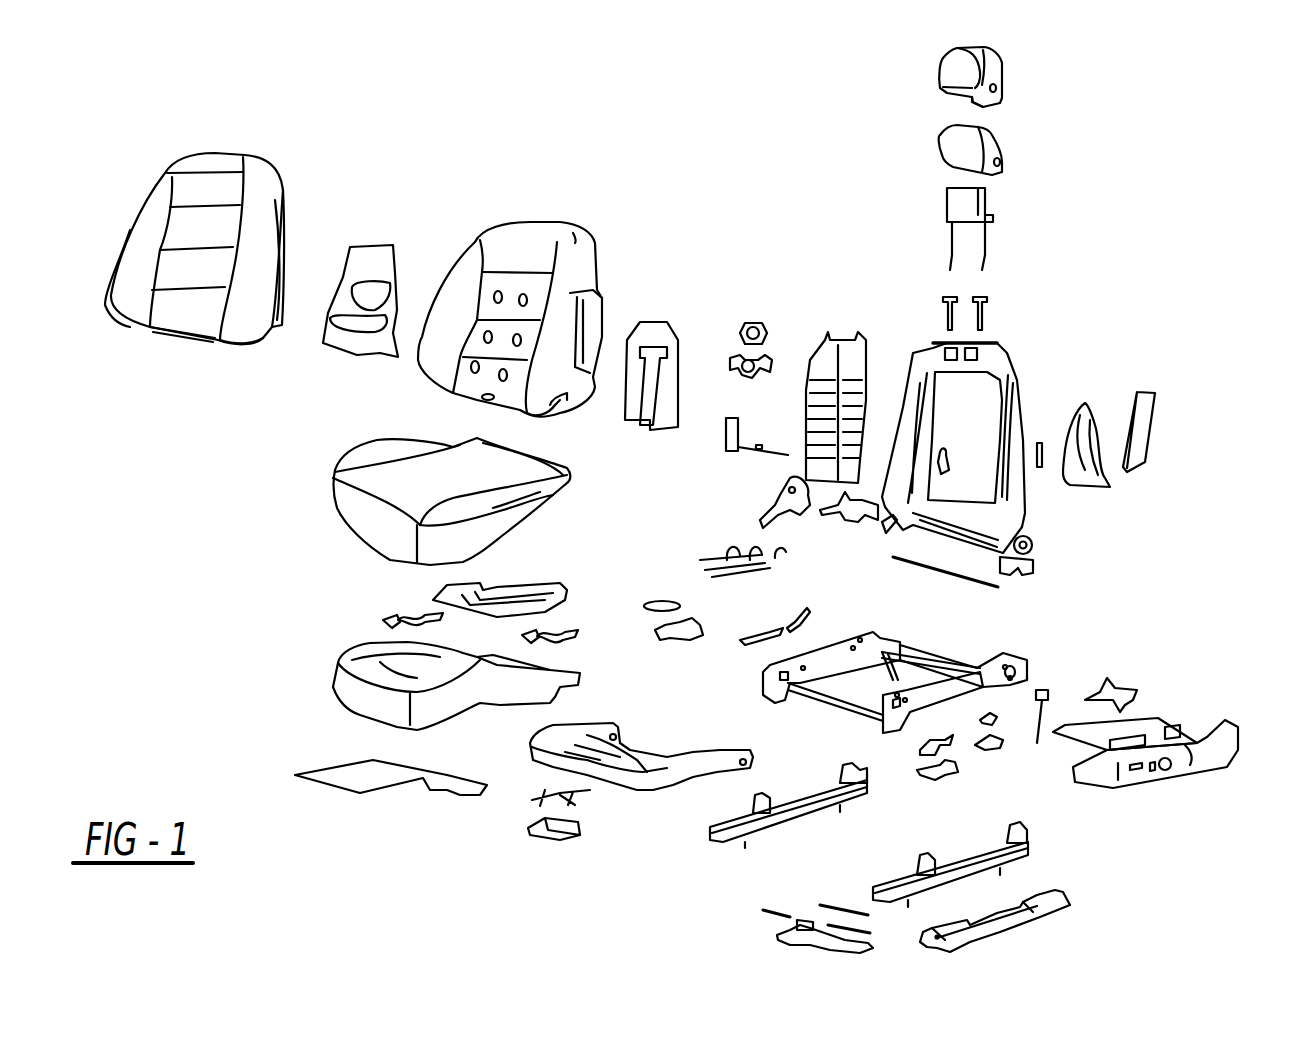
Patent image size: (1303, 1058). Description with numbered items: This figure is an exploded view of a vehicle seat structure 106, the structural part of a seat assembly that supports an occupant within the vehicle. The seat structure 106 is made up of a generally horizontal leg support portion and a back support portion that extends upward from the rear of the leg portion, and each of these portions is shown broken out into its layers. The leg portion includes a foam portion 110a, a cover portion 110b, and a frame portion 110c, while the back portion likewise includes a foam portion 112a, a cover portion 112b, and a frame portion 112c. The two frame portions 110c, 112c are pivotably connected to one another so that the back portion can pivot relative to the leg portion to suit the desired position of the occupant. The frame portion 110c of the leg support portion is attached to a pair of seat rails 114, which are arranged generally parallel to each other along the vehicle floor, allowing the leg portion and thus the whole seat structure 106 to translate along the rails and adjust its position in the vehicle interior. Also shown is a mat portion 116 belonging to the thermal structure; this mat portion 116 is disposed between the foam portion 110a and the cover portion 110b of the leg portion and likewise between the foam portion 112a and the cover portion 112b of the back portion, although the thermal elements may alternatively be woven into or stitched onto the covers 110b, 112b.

The seat structure 106 is at (1213, 443).
The foam portion 110a is at (337, 678).
The cover portion 110b is at (347, 528).
The frame portion 110c is at (1005, 653).
The foam portion 112a is at (543, 218).
The cover portion 112b is at (243, 152).
The frame portion 112c is at (1013, 367).
The seat rails 114 is at (710, 837).
The mat portion 116 is at (347, 357).